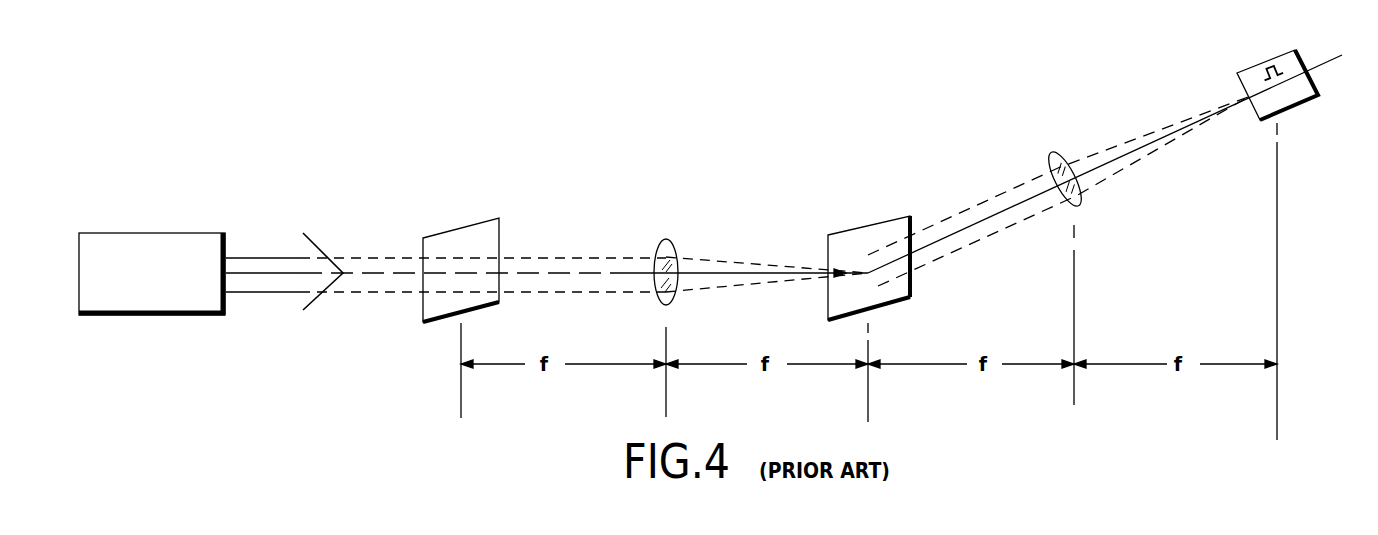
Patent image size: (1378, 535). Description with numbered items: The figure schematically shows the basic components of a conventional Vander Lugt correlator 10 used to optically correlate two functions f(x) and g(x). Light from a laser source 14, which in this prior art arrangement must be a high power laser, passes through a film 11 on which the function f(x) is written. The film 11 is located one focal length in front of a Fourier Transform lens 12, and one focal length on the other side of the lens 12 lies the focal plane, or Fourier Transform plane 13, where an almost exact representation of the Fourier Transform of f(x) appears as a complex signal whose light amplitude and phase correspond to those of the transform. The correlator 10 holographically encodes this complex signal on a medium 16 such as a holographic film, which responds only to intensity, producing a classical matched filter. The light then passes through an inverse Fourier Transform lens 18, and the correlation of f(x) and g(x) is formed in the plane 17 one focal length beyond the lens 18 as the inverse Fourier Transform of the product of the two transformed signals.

The Vander Lugt correlator 10 is at (492, 151).
The film 11 is at (468, 223).
The Fourier Transform lens 12 is at (666, 239).
The plane 13 is at (866, 242).
The laser source 14 is at (113, 316).
The medium 16 is at (888, 230).
The plane 17 is at (1253, 121).
The inverse Fourier Transform lens 18 is at (1052, 152).